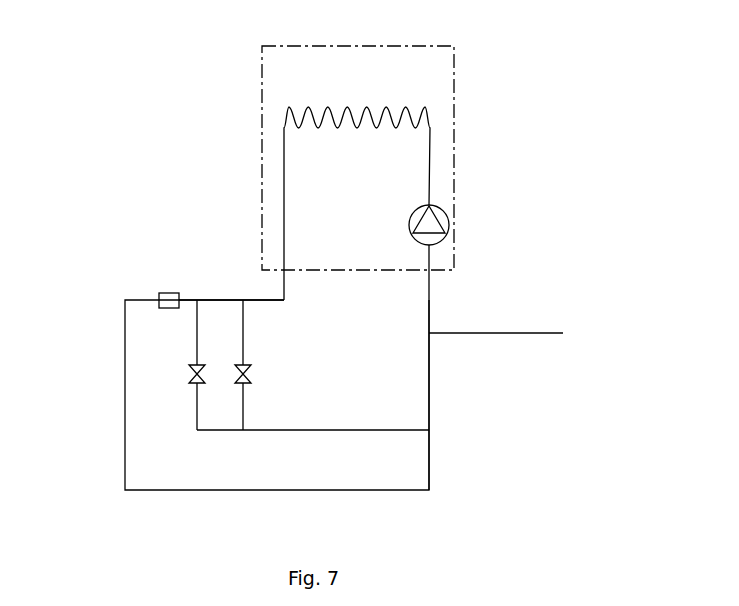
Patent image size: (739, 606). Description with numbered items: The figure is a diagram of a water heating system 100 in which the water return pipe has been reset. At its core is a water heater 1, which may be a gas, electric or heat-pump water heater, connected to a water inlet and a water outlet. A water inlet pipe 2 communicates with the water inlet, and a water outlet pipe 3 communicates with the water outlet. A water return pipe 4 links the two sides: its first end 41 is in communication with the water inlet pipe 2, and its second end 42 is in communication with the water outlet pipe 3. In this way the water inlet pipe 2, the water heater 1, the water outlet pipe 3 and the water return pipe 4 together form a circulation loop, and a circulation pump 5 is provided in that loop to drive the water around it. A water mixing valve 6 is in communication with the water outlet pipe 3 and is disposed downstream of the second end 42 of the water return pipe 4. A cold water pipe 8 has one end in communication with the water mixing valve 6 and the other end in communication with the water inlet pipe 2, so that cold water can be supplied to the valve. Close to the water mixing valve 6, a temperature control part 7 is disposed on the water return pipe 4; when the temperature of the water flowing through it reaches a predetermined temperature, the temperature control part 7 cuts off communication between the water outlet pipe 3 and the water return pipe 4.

The water heating system 100 is at (479, 69).
The water heater 1 is at (455, 123).
The circulation pump 5 is at (453, 229).
The water return pipe 4 is at (125, 412).
The water inlet pipe 2 is at (430, 298).
The first end 41 is at (430, 338).
The water outlet pipe 3 is at (258, 300).
The second end 42 is at (197, 300).
The cold water pipe 8 is at (330, 430).
The temperature control part 7 is at (165, 293).
The water mixing valve 6 is at (189, 372).